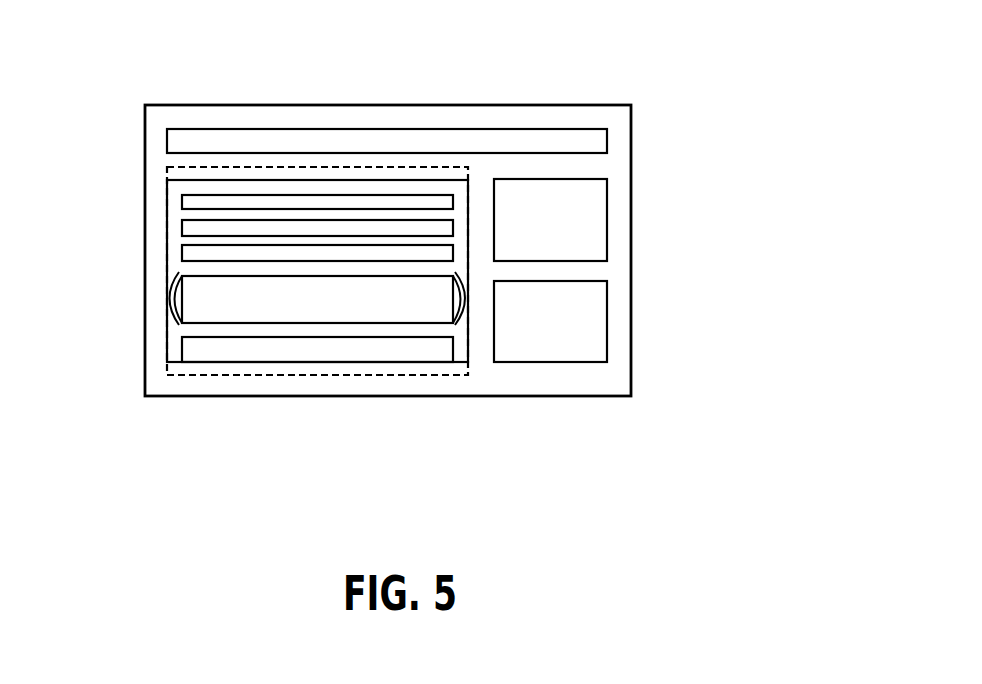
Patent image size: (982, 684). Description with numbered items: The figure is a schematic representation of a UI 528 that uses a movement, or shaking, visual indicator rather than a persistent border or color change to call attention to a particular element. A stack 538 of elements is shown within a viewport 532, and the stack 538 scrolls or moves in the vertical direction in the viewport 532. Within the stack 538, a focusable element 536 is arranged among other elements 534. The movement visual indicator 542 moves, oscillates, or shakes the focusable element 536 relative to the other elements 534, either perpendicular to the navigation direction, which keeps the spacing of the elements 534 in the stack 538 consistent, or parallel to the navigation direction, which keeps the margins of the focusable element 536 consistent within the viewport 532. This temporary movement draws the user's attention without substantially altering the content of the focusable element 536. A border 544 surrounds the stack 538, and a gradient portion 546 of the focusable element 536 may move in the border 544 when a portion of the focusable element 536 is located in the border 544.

The UI 528 is at (757, 62).
The viewport 532 is at (400, 367).
The other elements 534 is at (182, 207).
The focusable element 536 is at (180, 318).
The stack 538 is at (472, 277).
The movement visual indicator 542 is at (170, 281).
The border 544 is at (173, 378).
The gradient portion 546 is at (233, 367).